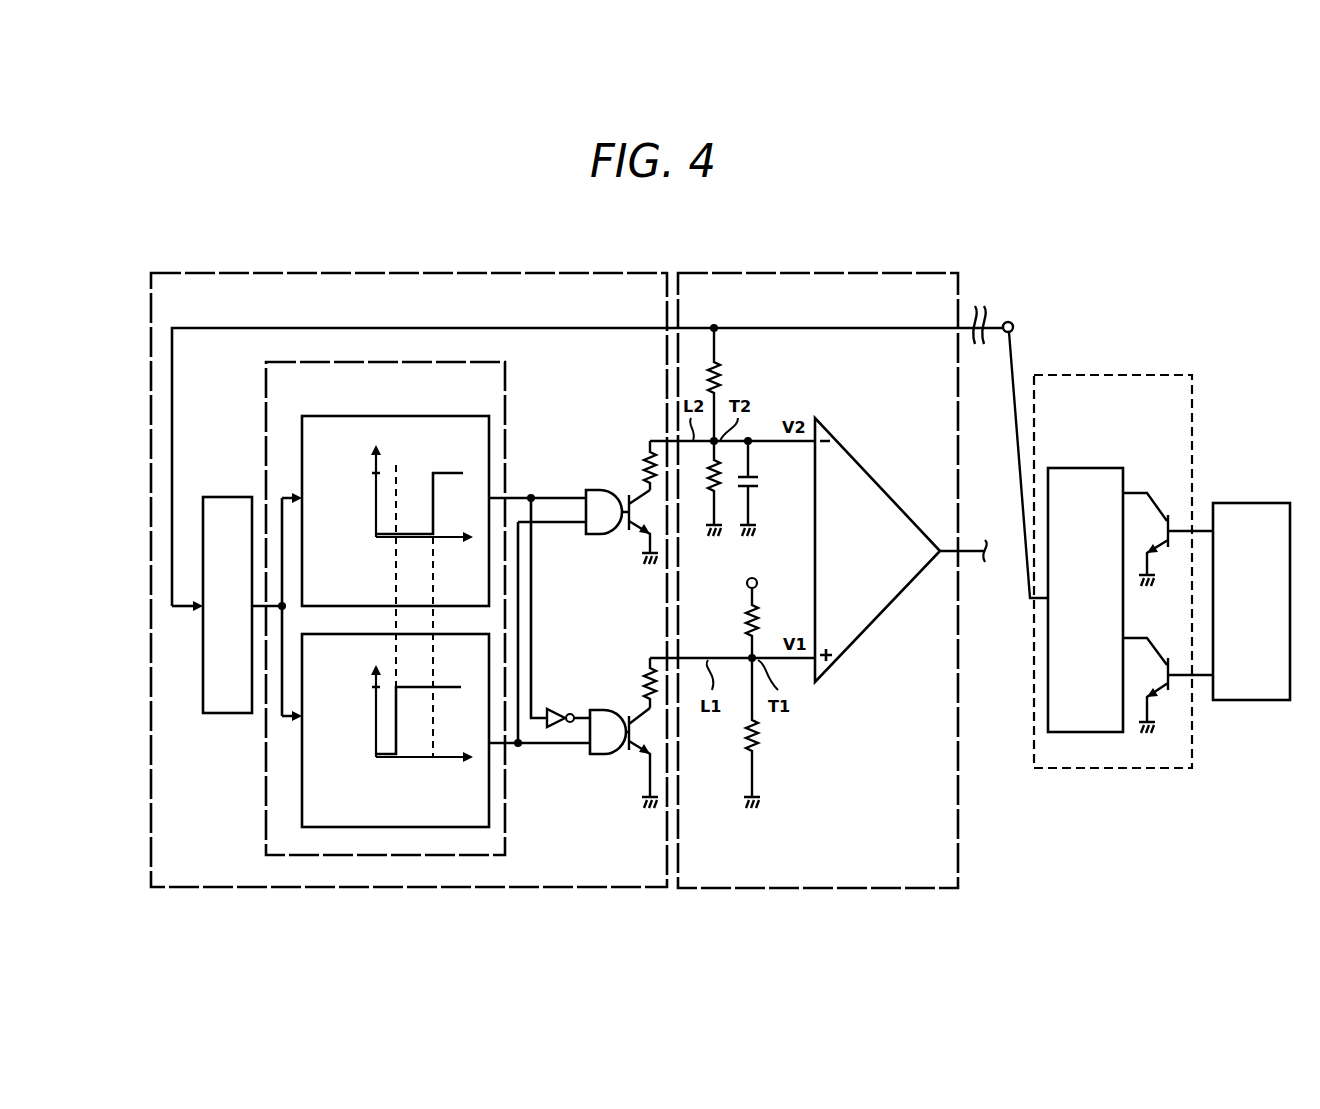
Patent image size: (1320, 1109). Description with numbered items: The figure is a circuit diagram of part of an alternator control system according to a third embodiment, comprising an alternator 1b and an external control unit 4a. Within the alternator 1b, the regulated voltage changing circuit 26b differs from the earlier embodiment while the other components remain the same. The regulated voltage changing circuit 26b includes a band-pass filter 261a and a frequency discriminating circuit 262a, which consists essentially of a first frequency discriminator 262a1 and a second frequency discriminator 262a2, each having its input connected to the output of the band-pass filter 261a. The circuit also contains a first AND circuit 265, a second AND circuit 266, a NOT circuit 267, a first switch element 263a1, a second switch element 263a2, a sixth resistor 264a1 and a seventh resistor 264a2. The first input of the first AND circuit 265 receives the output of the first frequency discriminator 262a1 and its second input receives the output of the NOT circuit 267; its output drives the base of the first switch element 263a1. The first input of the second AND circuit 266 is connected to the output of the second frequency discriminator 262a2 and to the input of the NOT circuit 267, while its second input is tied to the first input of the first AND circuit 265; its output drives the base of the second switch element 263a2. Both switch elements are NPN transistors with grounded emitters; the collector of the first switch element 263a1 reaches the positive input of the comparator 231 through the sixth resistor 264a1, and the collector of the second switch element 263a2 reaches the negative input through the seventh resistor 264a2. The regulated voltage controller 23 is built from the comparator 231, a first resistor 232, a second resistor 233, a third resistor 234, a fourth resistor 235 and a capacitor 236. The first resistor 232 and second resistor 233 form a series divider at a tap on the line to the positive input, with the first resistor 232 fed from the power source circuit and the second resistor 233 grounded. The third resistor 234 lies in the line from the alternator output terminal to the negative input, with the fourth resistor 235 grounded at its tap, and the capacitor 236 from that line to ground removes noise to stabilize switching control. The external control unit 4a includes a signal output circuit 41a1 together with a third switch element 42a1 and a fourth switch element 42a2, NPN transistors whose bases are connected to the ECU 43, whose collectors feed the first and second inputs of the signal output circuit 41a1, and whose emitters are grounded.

The alternator 1b is at (1025, 243).
The regulated voltage controller 23 is at (956, 272).
The regulated voltage changing circuit 26b is at (556, 273).
The band-pass filter 261a is at (230, 497).
The frequency discriminating circuit 262a is at (505, 370).
The first frequency discriminator 262a1 is at (478, 628).
The second frequency discriminator 262a2 is at (489, 418).
The first switch element 263a1 is at (626, 784).
The second switch element 263a2 is at (626, 559).
The sixth resistor 264a1 is at (644, 690).
The seventh resistor 264a2 is at (644, 448).
The first AND circuit 265 is at (592, 755).
The second AND circuit 266 is at (590, 490).
The NOT circuit 267 is at (560, 709).
The comparator 231 is at (866, 472).
The first resistor 232 is at (748, 624).
The second resistor 233 is at (760, 742).
The third resistor 234 is at (720, 366).
The fourth resistor 235 is at (709, 484).
The capacitor 236 is at (760, 480).
The external control unit 4a is at (1129, 373).
The signal output circuit 41a1 is at (1064, 733).
The third switch element 42a1 is at (1161, 695).
The fourth switch element 42a2 is at (1157, 512).
The ECU 43 is at (1264, 503).